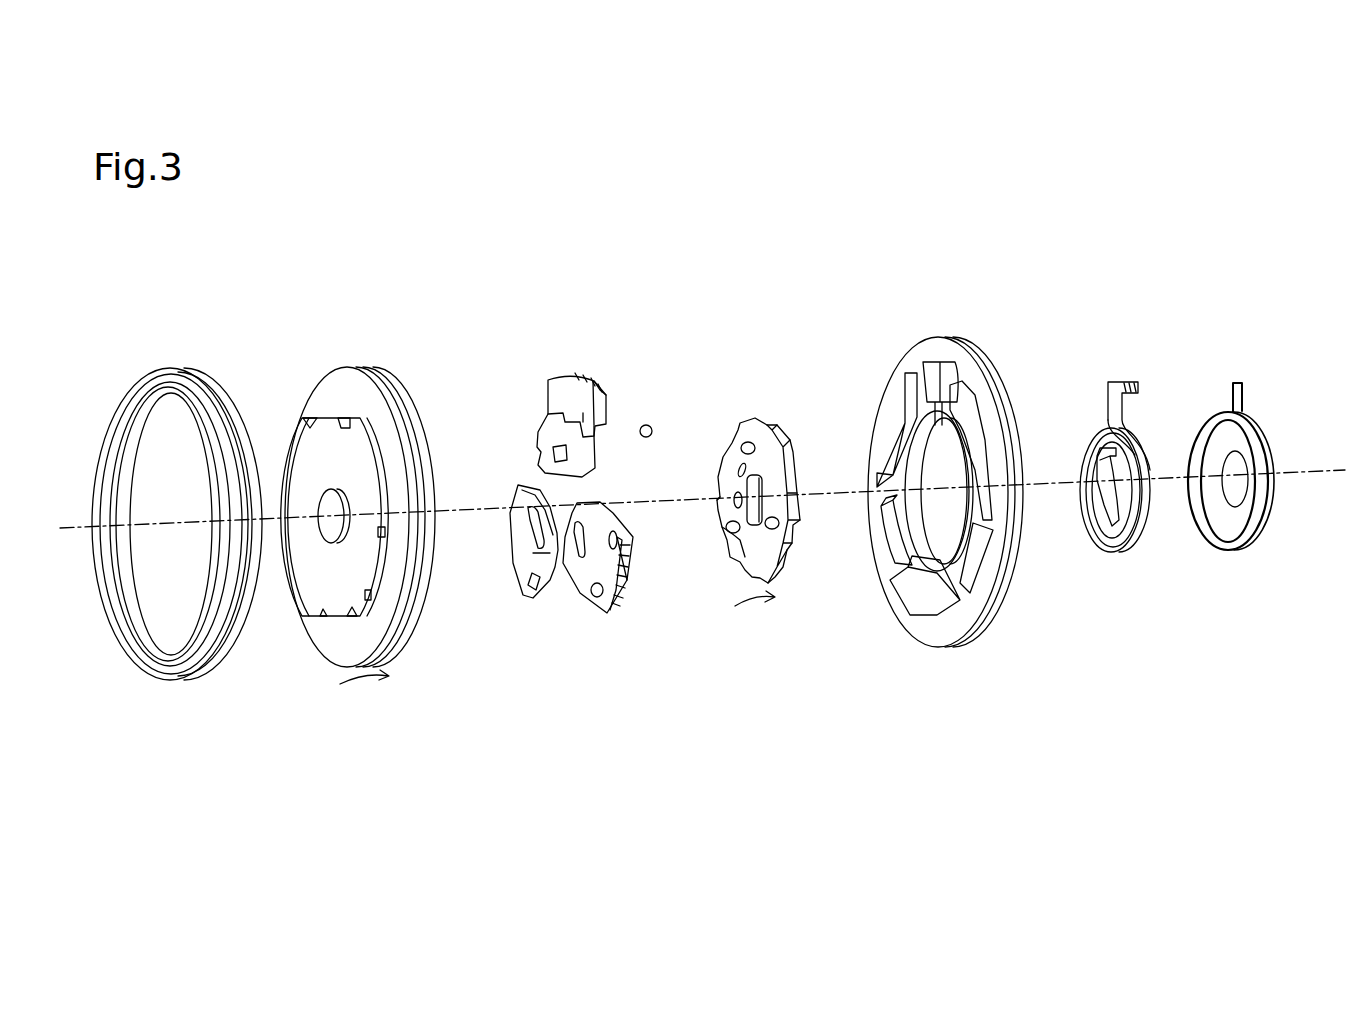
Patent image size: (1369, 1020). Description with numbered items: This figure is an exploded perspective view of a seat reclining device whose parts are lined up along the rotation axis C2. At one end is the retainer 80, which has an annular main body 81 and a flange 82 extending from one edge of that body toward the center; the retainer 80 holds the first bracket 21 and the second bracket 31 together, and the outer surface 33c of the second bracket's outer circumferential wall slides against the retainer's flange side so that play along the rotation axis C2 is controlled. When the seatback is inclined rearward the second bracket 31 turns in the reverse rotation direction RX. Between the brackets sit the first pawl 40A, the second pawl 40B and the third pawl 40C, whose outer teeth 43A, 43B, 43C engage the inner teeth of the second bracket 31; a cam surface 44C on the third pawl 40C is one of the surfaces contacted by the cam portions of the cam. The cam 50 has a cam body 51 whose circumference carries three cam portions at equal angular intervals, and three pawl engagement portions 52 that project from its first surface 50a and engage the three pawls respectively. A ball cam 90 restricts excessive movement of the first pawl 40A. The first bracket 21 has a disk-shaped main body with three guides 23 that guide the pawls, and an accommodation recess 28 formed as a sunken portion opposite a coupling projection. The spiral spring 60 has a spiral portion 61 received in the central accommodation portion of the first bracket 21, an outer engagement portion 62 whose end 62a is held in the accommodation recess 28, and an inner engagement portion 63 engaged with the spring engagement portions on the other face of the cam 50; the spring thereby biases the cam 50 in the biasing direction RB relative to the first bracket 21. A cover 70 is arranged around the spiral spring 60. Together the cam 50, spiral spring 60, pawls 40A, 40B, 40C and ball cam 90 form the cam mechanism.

The retainer 80 is at (177, 496).
The annular main body 81 is at (215, 679).
The flange 82 is at (141, 655).
The second bracket 31 is at (353, 480).
The outer surface 33c is at (331, 652).
The reverse rotation direction RX is at (365, 695).
The first pawl 40A is at (564, 363).
The outer teeth 43A is at (568, 378).
The ball cam 90 is at (645, 424).
The third pawl 40C is at (508, 596).
The outer teeth 43C is at (511, 565).
The cam surface 44C is at (572, 594).
The second pawl 40B is at (614, 611).
The outer teeth 43B is at (624, 593).
The cam 50 is at (745, 439).
The cam body 51 is at (771, 428).
The pawl engagement portions 52 is at (744, 446).
The first surface 50a is at (746, 560).
The biasing direction RB is at (756, 614).
The first bracket 21 is at (936, 457).
The accommodation recess 28 is at (940, 362).
The guides 23 is at (888, 422).
The spiral spring 60 is at (1124, 413).
The spiral portion 61 is at (1141, 540).
The outer engagement portion 62 is at (1152, 401).
The end 62a is at (1140, 362).
The inner engagement portion 63 is at (1097, 466).
The cover 70 is at (1226, 273).
The rotation axis C2 is at (1318, 475).